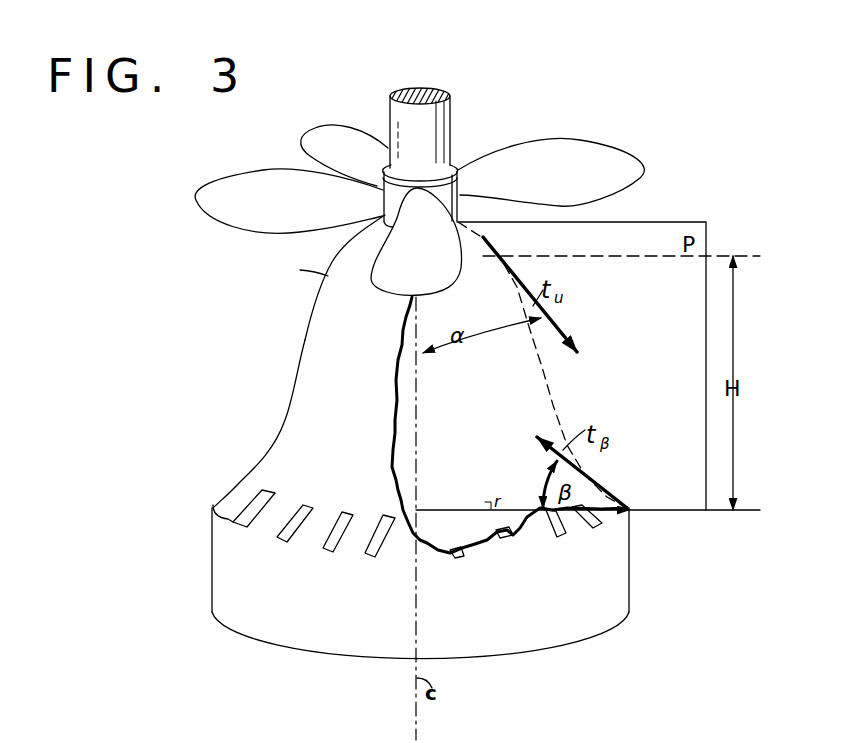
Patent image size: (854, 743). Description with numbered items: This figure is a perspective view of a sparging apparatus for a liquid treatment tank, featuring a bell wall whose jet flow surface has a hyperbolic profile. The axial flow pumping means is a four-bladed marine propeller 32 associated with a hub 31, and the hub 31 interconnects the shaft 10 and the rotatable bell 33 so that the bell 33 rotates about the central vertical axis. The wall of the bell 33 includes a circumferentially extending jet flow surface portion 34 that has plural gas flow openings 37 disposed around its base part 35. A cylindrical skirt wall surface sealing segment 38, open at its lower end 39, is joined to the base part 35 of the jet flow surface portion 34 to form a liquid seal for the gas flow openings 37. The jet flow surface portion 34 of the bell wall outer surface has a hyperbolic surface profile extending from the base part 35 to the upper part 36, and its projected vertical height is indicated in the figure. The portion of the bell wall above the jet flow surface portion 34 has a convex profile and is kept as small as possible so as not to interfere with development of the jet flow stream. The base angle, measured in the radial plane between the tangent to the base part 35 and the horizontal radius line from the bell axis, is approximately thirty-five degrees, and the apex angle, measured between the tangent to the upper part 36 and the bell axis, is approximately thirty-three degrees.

The shaft 10 is at (402, 117).
The hub 31 is at (448, 165).
The marine propeller 32 is at (610, 172).
The rotatable bell 33 is at (266, 428).
The jet flow surface portion 34 is at (295, 386).
The base part 35 is at (240, 482).
The upper part 36 is at (323, 273).
The gas flow openings 37 is at (243, 522).
The cylindrical skirt wall surface sealing segment 38 is at (630, 571).
The lower end 39 is at (520, 654).